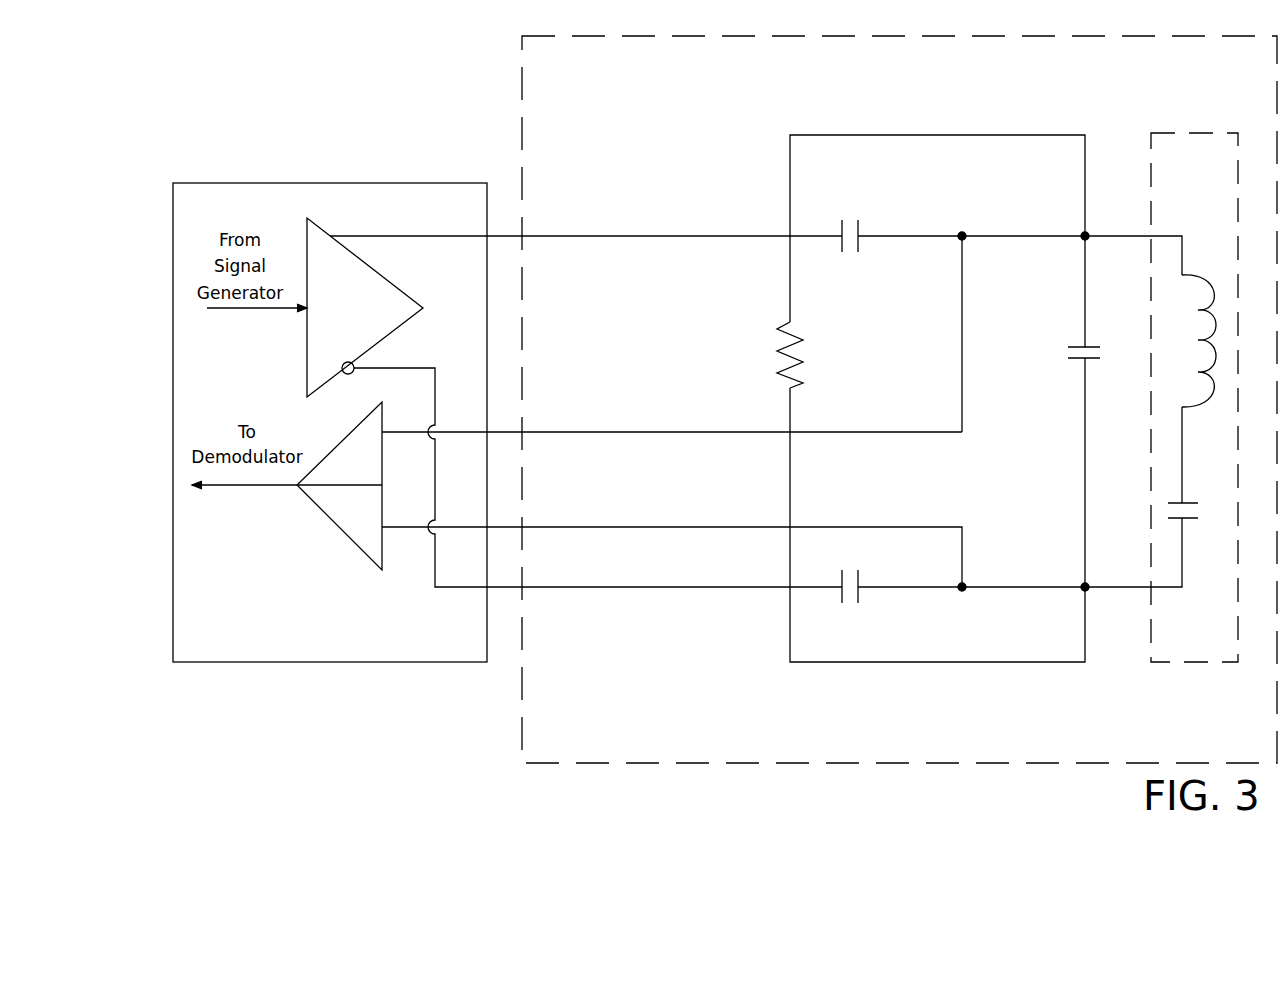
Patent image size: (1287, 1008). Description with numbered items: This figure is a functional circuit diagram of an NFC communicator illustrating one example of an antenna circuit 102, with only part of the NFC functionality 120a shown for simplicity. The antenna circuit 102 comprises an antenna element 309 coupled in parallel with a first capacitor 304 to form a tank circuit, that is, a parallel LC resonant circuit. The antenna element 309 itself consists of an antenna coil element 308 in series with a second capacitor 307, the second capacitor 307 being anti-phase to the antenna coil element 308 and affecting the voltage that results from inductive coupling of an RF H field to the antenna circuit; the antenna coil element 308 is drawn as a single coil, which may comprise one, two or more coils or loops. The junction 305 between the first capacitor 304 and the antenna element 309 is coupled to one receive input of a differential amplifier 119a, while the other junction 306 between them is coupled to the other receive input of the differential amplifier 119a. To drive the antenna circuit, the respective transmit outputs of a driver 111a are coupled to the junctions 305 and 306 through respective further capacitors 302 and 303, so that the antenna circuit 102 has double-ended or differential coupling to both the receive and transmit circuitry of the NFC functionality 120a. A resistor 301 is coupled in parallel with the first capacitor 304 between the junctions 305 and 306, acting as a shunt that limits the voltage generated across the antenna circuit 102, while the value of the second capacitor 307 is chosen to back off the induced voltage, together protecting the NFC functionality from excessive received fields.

The NFC functionality 120a is at (332, 183).
The driver 111a is at (438, 275).
The differential amplifier 119a is at (347, 530).
The antenna circuit 102 is at (1083, 778).
The resistor 301 is at (803, 337).
The further capacitor 302 is at (848, 220).
The further capacitor 303 is at (855, 570).
The first capacitor 304 is at (1062, 353).
The junction 305 is at (1090, 234).
The junction 306 is at (1087, 590).
The second capacitor 307 is at (1200, 512).
The antenna coil element 308 is at (1205, 267).
The antenna element 309 is at (1190, 670).